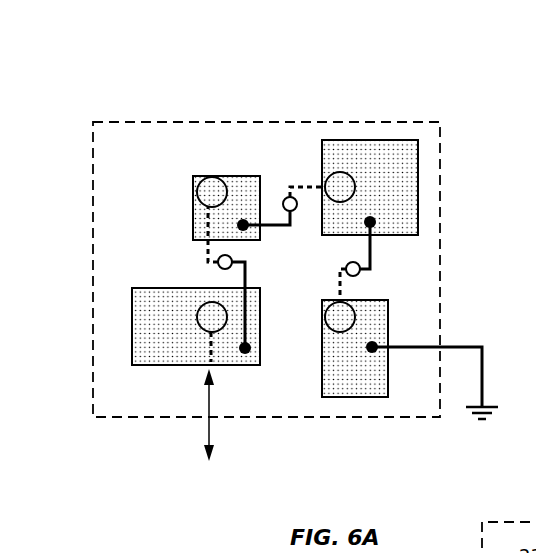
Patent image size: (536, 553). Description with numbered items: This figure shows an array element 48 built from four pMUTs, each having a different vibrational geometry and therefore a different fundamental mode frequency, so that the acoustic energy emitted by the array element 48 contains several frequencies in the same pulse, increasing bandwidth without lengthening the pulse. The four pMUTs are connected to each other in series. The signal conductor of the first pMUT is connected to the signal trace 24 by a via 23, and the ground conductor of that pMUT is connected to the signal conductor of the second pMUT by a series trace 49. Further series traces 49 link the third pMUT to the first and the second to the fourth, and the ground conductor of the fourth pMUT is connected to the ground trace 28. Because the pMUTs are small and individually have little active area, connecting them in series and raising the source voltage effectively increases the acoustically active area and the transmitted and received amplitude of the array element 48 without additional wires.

The array element 48 is at (170, 72).
The via 23 is at (226, 182).
The series trace 49 is at (311, 186).
The signal trace 24 is at (208, 348).
The ground trace 28 is at (455, 347).